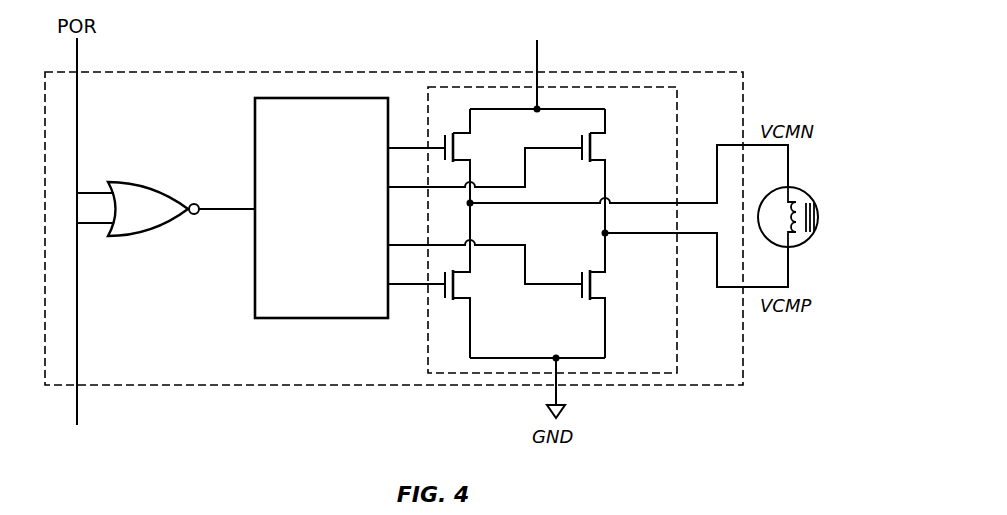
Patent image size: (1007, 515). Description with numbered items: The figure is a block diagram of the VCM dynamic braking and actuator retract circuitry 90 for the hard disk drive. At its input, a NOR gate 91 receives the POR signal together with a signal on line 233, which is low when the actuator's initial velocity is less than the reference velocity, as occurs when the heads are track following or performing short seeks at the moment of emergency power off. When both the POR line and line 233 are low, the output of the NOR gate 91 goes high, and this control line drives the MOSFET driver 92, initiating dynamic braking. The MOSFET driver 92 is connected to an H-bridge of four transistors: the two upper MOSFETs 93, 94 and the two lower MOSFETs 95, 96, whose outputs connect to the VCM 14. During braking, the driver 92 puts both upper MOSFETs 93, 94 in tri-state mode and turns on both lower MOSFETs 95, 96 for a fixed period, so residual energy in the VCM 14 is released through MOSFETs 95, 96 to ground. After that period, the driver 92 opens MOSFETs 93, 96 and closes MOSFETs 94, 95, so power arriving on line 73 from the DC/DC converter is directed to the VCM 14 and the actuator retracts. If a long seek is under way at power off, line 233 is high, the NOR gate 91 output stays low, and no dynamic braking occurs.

The VCM 14 is at (818, 217).
The line 73 is at (537, 52).
The VCM dynamic braking/actuator retract circuitry 90 is at (287, 72).
The NOR gate 91 is at (142, 182).
The MOSFET driver 92 is at (255, 295).
The upper MOSFET 93 is at (469, 147).
The upper MOSFET 94 is at (598, 147).
The lower MOSFET 95 is at (470, 285).
The lower MOSFET 96 is at (600, 285).
The line 233 is at (78, 402).